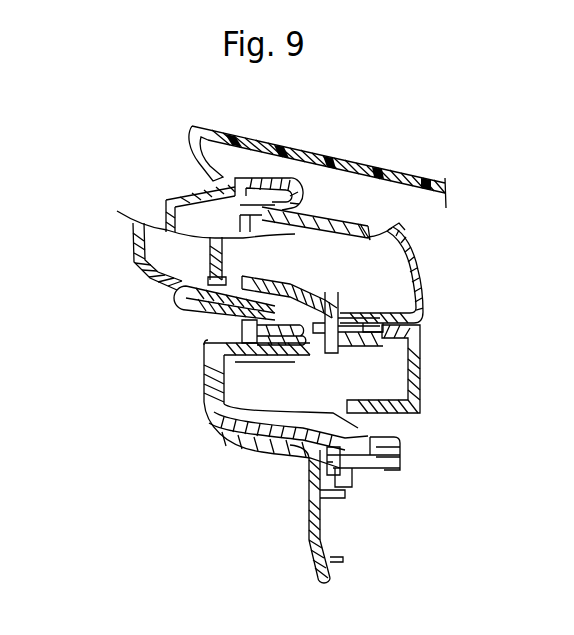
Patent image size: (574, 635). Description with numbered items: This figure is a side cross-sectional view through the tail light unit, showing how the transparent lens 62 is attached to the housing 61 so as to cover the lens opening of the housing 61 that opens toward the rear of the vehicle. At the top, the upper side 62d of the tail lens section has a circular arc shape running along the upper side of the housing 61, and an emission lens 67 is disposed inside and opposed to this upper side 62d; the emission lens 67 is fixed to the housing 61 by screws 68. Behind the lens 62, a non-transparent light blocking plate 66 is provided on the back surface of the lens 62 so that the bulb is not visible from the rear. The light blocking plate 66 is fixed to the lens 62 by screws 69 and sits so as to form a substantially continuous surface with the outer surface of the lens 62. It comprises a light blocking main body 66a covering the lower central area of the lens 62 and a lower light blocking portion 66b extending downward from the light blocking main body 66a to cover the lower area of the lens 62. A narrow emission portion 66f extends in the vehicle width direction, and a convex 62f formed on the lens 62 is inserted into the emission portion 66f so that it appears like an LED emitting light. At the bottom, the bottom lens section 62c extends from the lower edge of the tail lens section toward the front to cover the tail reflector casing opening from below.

The housing 61 is at (437, 285).
The lens 62 is at (165, 201).
The bottom lens section 62c is at (297, 457).
The upper side 62d is at (133, 241).
The convex 62f is at (200, 378).
The light blocking plate 66 is at (196, 319).
The light blocking main body 66a is at (205, 405).
The lower light blocking portion 66b is at (310, 540).
The emission portion 66f is at (200, 385).
The emission lens 67 is at (204, 263).
The screw 68 is at (320, 353).
The screw 69 is at (247, 283).